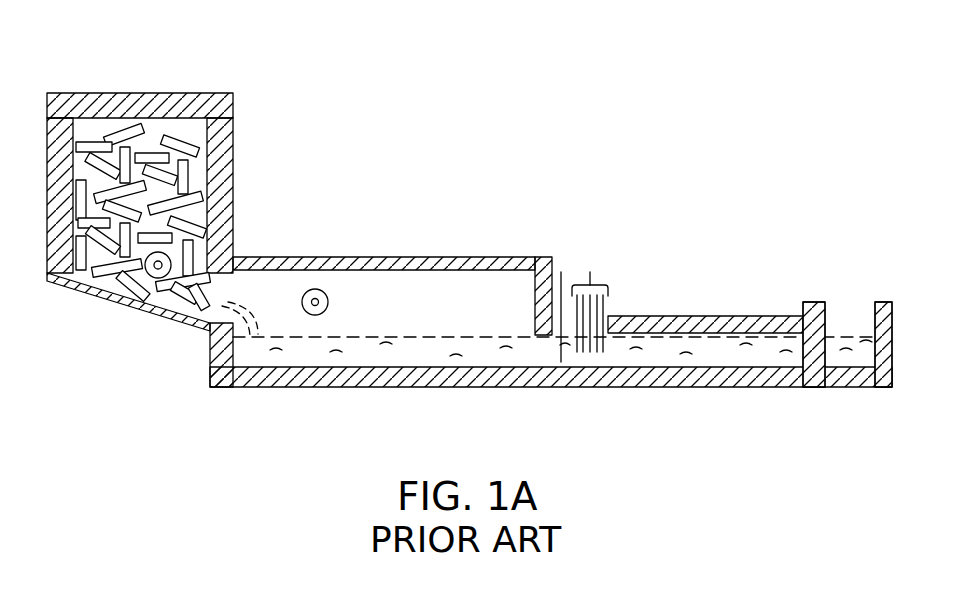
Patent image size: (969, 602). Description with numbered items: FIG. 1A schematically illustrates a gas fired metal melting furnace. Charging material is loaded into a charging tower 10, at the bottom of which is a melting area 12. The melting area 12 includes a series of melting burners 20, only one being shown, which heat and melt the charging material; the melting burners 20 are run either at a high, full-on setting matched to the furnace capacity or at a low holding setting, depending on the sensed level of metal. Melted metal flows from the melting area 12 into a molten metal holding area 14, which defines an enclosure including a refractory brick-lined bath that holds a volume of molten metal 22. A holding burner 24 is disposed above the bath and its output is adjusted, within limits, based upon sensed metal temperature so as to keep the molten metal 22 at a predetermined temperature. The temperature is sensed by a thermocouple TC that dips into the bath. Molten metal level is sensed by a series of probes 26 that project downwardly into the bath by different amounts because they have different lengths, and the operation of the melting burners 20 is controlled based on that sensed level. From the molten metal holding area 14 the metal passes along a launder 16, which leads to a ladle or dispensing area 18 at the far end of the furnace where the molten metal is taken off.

The charging tower 10 is at (182, 131).
The melting area 12 is at (132, 312).
The molten metal holding area 14 is at (408, 246).
The launder 16 is at (702, 297).
The ladle or dispensing area 18 is at (861, 300).
The melting burner 20 is at (172, 262).
The molten metal 22 is at (528, 357).
The holding burner 24 is at (324, 290).
The probes 26 is at (590, 272).
The thermocouple TC is at (560, 286).